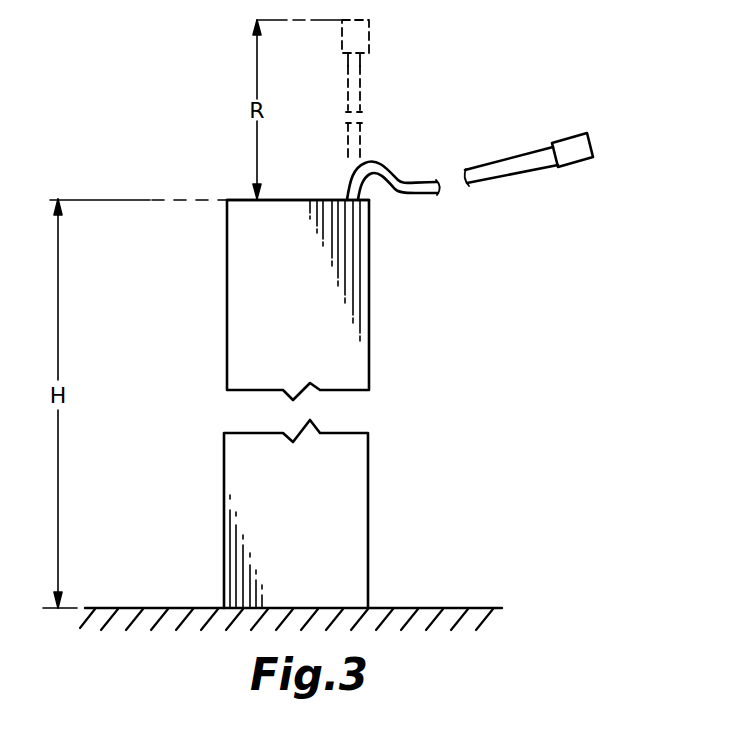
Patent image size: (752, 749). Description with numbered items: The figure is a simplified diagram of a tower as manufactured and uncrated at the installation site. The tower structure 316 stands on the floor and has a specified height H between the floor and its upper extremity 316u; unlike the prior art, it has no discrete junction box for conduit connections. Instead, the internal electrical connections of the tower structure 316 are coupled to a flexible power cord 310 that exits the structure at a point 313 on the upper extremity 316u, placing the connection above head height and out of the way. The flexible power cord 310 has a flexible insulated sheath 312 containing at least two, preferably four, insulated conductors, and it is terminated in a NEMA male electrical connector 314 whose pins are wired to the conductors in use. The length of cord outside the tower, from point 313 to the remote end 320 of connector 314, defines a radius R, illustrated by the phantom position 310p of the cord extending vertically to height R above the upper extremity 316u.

The flexible power cord 310 is at (499, 215).
The phantom position of the flexible power cord 310p is at (384, 102).
The flexible insulated sheath 312 is at (488, 184).
The point 313 is at (344, 199).
The NEMA male electrical connector 314 is at (586, 165).
The tower structure 316 is at (227, 300).
The upper extremity 316u is at (230, 199).
The remote end 320 is at (593, 147).